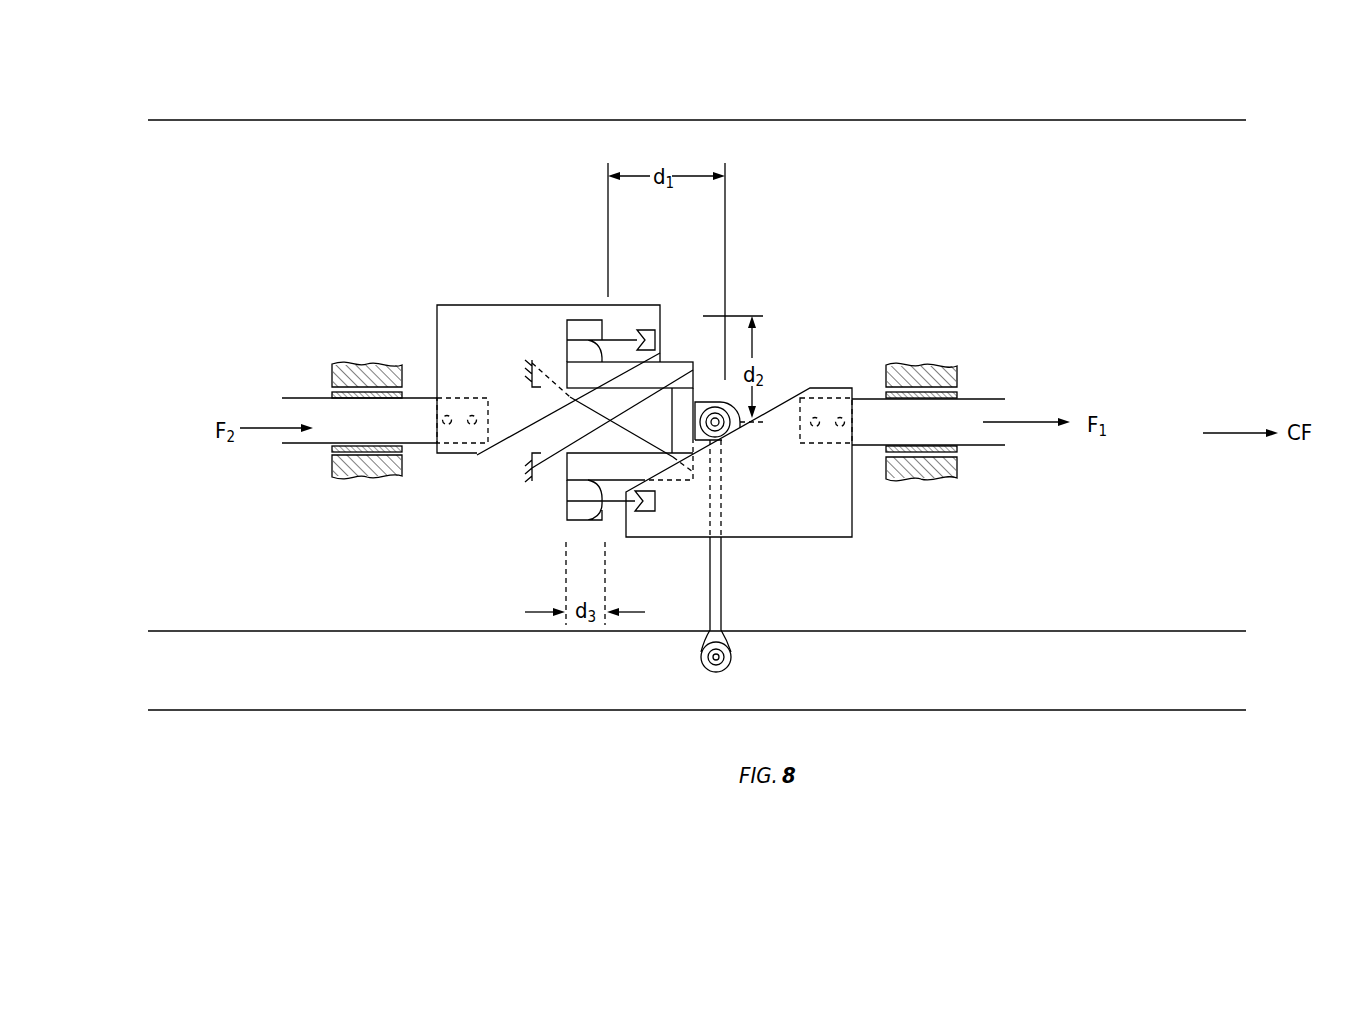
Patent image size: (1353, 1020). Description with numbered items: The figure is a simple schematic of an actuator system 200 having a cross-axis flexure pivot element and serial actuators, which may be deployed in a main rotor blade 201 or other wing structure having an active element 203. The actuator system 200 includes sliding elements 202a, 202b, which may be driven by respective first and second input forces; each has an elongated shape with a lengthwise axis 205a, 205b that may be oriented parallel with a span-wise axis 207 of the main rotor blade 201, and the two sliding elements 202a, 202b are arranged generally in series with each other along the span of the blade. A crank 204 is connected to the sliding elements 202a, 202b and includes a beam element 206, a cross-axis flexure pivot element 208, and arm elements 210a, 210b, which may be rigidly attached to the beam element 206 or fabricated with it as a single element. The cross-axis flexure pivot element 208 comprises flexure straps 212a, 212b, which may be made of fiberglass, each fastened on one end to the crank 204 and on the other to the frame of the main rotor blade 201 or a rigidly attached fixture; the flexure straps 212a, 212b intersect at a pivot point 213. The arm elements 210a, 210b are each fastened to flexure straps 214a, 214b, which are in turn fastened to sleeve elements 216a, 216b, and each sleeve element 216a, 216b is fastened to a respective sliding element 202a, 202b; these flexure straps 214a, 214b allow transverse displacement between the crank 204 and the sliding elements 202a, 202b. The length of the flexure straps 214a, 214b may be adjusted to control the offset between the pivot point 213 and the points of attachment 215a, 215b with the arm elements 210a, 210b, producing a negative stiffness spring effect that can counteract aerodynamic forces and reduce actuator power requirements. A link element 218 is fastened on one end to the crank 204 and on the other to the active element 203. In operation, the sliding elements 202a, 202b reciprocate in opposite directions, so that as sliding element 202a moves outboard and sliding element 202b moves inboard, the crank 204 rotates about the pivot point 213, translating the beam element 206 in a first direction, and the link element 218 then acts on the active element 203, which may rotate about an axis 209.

The actuator system 200 is at (248, 205).
The main rotor blade 201 is at (205, 112).
The sliding element 202a is at (990, 407).
The sliding element 202b is at (318, 408).
The active element 203 is at (304, 698).
The crank 204 is at (553, 478).
The lengthwise axis 205a is at (1115, 445).
The lengthwise axis 205b is at (192, 428).
The beam element 206 is at (687, 398).
The span-wise axis 207 is at (1160, 446).
The cross-axis flexure pivot element 208 is at (523, 447).
The axis 209 is at (1186, 670).
The arm element 210a is at (642, 476).
The arm element 210b is at (663, 372).
The flexure strap 212a is at (658, 393).
The flexure strap 212b is at (640, 447).
The pivot point 213 is at (608, 417).
The flexure strap 214a is at (610, 502).
The flexure strap 214b is at (618, 338).
The point of attachment 215a is at (567, 501).
The point of attachment 215b is at (567, 340).
The sleeve element 216a is at (787, 537).
The sleeve element 216b is at (512, 303).
The link element 218 is at (722, 618).